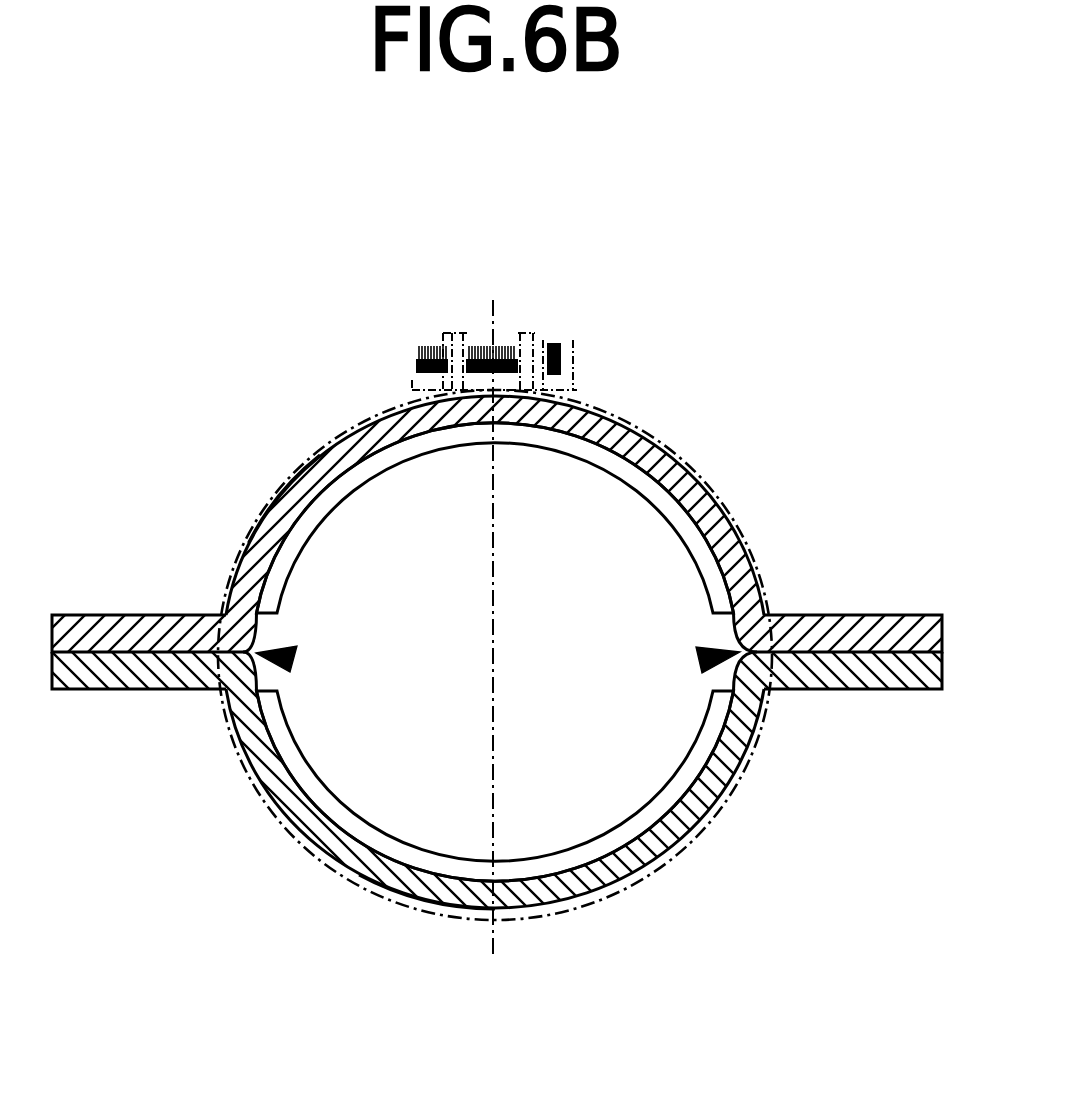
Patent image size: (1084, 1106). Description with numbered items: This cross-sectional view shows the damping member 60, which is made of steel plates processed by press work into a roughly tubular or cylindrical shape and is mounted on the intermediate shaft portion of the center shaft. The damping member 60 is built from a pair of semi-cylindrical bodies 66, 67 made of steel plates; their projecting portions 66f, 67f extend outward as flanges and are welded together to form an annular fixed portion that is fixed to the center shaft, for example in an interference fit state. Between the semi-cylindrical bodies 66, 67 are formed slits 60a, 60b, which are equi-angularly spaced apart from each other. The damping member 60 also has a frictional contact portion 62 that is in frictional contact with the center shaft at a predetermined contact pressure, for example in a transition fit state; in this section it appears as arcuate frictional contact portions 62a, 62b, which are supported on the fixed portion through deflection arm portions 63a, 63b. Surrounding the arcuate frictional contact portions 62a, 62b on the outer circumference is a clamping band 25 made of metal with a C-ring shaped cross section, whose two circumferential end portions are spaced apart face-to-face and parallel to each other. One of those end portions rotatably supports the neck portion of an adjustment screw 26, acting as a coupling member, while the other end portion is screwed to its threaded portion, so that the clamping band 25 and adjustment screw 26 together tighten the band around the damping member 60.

The clamping band 25 is at (745, 523).
The adjustment screw 26 is at (492, 332).
The damping member 60 is at (645, 296).
The slit 60a is at (297, 657).
The slit 60b is at (693, 657).
The frictional contact portion 62 is at (313, 410).
The arcuate frictional contact portion 62a is at (400, 462).
The arcuate frictional contact portion 62b is at (531, 860).
The deflection arm portion 63a is at (275, 515).
The deflection arm portion 63b is at (398, 901).
The semi-cylindrical body 66 is at (664, 466).
The projecting portion 66f is at (133, 632).
The semi-cylindrical body 67 is at (597, 886).
The projecting portion 67f is at (133, 673).